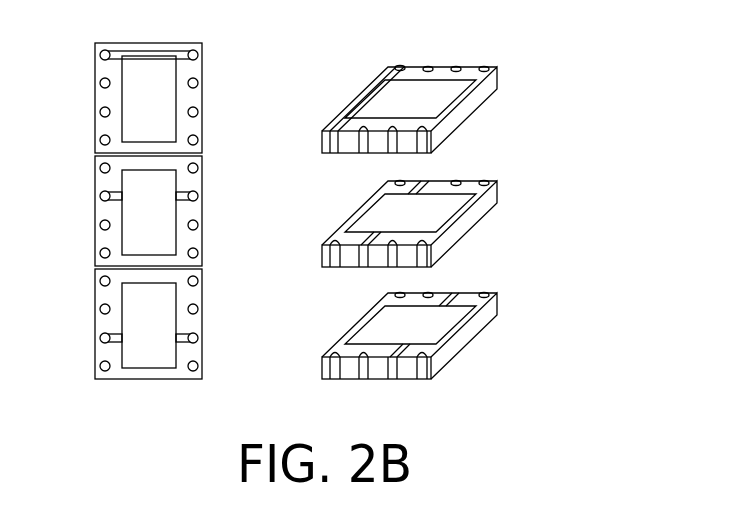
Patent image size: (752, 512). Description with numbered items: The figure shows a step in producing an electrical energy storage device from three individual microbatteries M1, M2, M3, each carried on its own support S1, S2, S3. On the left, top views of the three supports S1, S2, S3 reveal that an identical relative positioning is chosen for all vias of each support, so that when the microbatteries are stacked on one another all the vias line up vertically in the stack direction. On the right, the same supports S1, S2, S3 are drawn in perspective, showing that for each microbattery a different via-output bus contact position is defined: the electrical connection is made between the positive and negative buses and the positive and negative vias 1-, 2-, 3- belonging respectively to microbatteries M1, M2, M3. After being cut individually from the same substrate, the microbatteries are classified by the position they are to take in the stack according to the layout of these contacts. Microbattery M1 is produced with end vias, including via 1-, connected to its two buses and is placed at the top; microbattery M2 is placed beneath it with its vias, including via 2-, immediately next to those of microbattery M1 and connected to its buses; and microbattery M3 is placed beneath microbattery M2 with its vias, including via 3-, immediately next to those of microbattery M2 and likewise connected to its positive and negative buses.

The negative via 1- is at (199, 53).
The negative via 2- is at (199, 196).
The negative via 3- is at (199, 337).
The support S1 is at (472, 98).
The support S2 is at (472, 212).
The support S3 is at (472, 326).
The microbattery M1 is at (334, 84).
The microbattery M2 is at (331, 201).
The microbattery M3 is at (330, 314).